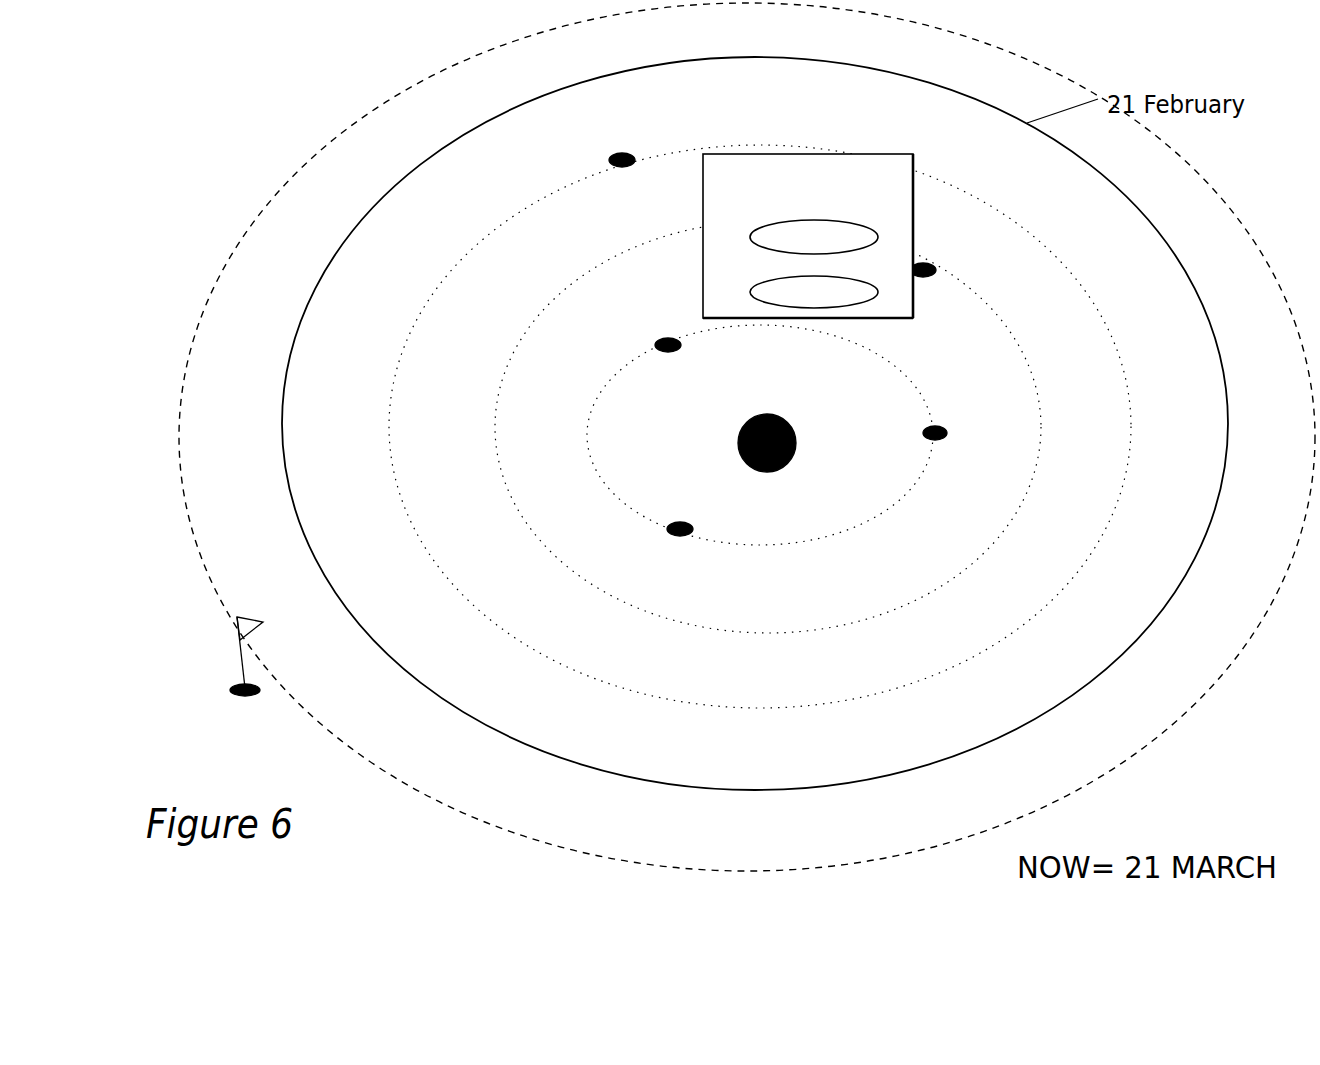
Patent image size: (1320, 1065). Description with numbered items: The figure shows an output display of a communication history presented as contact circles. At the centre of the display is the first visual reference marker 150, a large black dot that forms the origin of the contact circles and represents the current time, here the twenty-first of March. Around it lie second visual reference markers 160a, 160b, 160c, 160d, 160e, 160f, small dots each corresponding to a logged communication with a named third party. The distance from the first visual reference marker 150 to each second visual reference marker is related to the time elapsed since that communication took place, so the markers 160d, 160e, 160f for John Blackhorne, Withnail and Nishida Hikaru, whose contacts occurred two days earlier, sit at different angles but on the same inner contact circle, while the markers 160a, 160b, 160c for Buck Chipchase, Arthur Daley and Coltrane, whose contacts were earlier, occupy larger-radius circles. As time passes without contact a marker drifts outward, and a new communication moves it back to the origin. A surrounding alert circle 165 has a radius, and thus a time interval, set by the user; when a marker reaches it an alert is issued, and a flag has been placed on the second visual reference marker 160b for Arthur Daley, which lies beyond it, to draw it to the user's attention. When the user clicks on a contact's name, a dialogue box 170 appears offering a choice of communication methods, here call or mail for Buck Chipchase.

The first visual reference marker 150 is at (785, 418).
The second visual reference marker 160a is at (627, 167).
The second visual reference marker 160b is at (233, 685).
The second visual reference marker 160c is at (922, 277).
The second visual reference marker 160d is at (677, 525).
The second visual reference marker 160e is at (937, 440).
The second visual reference marker 160f is at (672, 352).
The alert circle 165 is at (1147, 222).
The dialogue box 170 is at (797, 154).